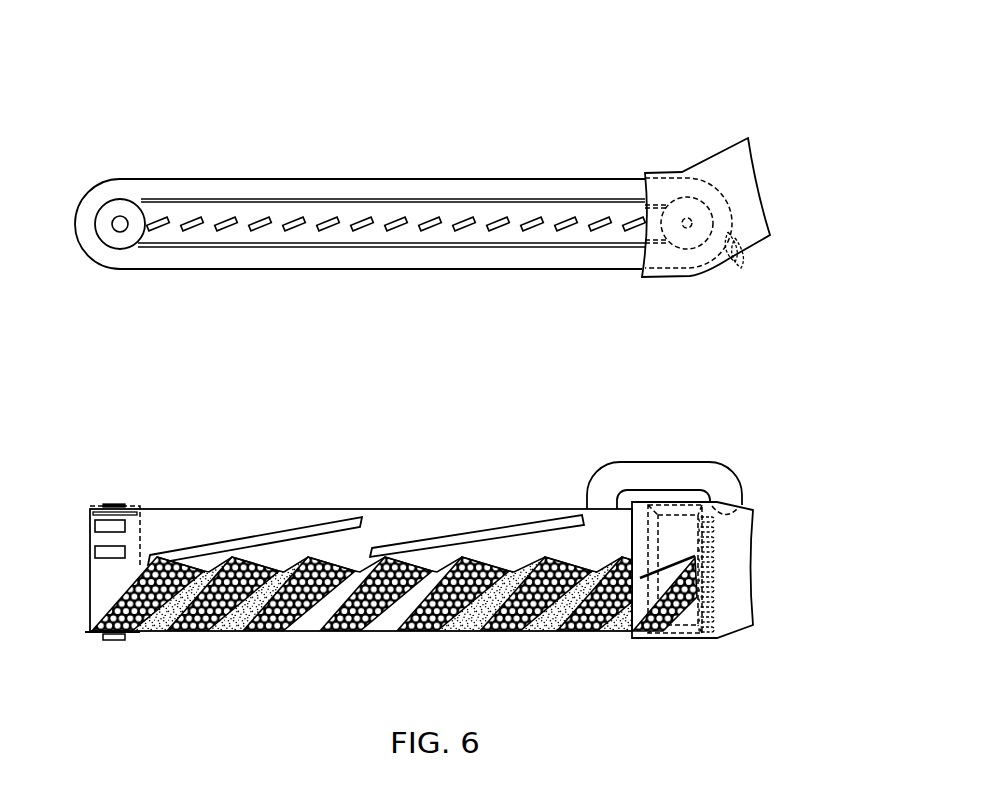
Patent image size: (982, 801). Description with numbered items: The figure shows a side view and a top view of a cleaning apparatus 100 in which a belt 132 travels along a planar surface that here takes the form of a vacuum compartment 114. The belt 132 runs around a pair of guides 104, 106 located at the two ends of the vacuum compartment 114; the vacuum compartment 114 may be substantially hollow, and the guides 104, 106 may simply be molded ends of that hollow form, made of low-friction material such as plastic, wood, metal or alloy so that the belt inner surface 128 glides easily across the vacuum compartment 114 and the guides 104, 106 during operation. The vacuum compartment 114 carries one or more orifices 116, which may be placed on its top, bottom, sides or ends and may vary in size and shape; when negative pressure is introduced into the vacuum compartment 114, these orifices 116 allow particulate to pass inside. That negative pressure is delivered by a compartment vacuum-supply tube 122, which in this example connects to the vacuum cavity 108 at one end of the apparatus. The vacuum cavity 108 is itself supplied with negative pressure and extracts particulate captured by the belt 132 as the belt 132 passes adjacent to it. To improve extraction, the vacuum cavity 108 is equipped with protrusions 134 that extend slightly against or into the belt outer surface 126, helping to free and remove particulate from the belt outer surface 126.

The cleaning apparatus 100 is at (722, 98).
The guide 104 is at (707, 208).
The guide 106 is at (102, 200).
The vacuum cavity 108 is at (723, 148).
The vacuum compartment 114 is at (397, 227).
The vacuum compartment orifices 116 is at (460, 228).
The compartment vacuum-supply tube 122 is at (662, 472).
The belt outer surface 126 is at (527, 268).
The belt inner surface 128 is at (497, 202).
The belt 132 is at (330, 632).
The protrusions 134 is at (740, 252).